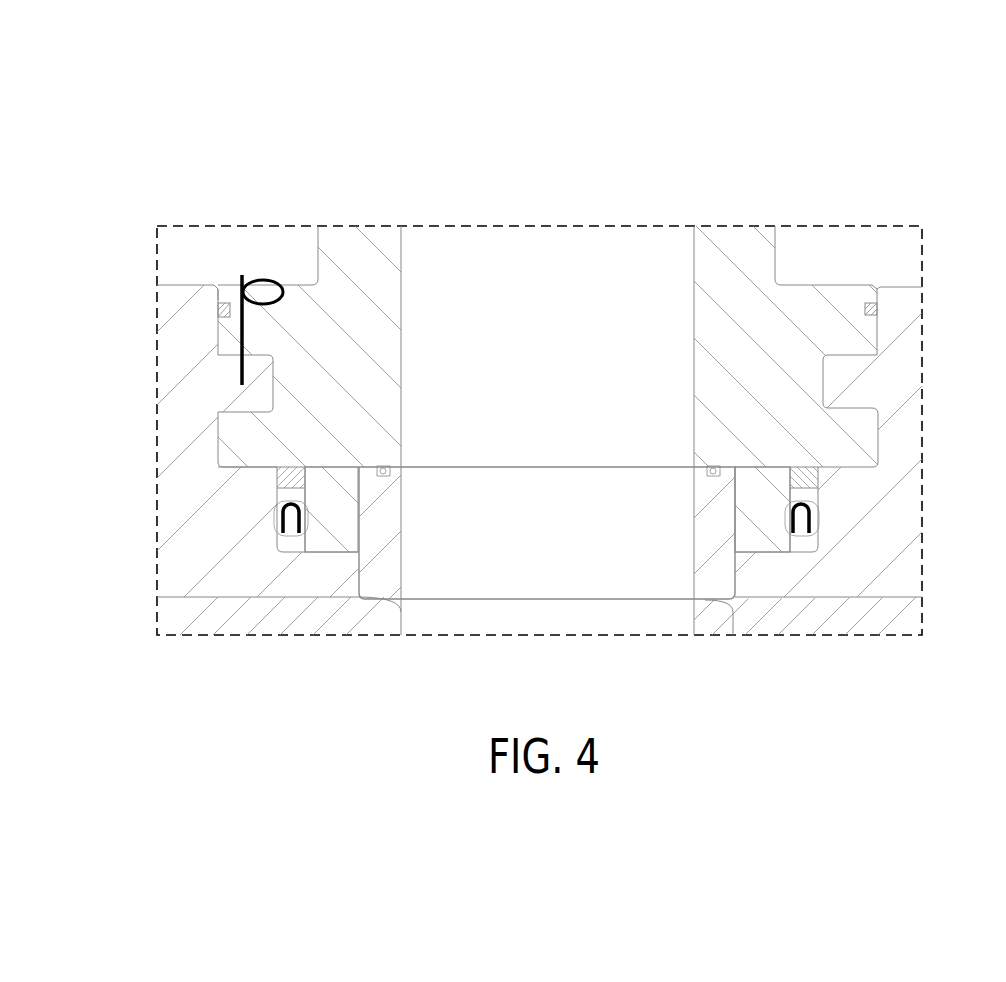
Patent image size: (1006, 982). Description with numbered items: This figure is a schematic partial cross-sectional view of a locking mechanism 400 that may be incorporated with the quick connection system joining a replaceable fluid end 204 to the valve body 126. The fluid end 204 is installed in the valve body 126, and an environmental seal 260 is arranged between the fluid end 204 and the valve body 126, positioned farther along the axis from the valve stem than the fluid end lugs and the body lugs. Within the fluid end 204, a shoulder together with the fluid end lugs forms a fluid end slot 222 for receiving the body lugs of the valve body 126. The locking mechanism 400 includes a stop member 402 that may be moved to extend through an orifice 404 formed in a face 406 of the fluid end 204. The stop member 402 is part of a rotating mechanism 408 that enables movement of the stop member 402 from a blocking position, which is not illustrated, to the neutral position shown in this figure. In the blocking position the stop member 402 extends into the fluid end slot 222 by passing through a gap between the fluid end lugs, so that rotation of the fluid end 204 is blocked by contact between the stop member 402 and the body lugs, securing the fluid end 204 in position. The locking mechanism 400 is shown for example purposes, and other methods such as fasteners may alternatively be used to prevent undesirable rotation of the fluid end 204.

The valve body 126 is at (906, 286).
The fluid end 204 is at (801, 286).
The fluid end slot 222 is at (185, 416).
The environmental seal 260 is at (870, 315).
The locking mechanism 400 is at (266, 186).
The stop member 402 is at (241, 369).
The orifice 404 is at (221, 281).
The face 406 is at (290, 285).
The rotating mechanism 408 is at (262, 280).